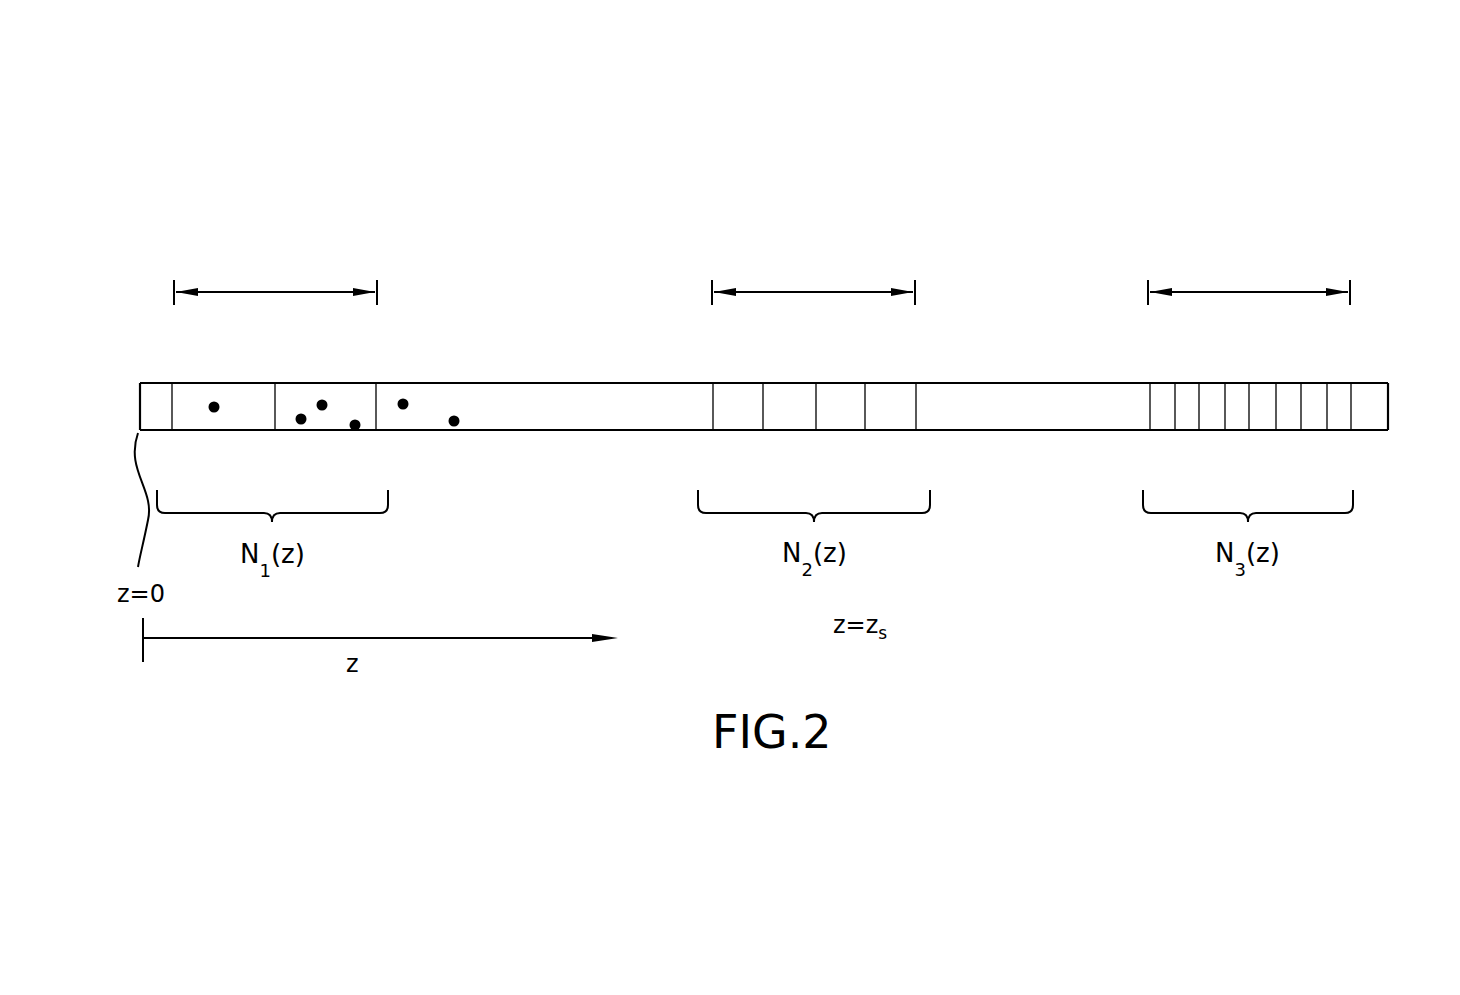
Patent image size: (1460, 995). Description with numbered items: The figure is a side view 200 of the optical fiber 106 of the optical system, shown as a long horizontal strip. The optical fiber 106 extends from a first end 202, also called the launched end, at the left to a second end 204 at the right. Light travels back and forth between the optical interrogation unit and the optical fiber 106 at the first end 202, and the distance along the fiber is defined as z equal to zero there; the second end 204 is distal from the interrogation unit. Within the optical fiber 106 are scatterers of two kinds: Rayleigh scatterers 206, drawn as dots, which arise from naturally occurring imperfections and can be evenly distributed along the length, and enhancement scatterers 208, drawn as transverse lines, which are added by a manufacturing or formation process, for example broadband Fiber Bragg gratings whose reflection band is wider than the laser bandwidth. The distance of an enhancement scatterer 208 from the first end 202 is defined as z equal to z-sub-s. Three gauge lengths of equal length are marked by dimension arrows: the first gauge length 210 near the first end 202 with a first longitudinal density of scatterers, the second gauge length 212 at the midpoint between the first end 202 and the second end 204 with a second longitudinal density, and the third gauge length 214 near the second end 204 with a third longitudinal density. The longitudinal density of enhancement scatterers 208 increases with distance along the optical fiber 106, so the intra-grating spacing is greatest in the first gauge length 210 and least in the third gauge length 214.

The side view 200 is at (961, 222).
The optical fiber 106 is at (535, 383).
The first end 202 is at (139, 365).
The second end 204 is at (1388, 375).
The Rayleigh scatterers 206 is at (403, 410).
The enhancement scatterers 208 is at (273, 410).
The first gauge length 210 is at (270, 292).
The second gauge length 212 is at (820, 292).
The third gauge length 214 is at (1246, 292).